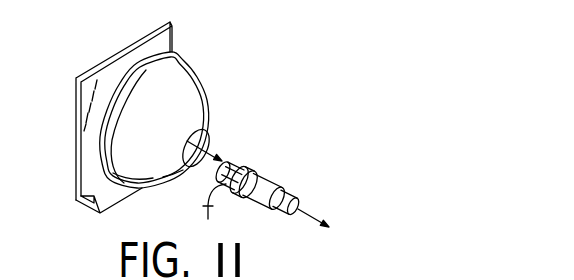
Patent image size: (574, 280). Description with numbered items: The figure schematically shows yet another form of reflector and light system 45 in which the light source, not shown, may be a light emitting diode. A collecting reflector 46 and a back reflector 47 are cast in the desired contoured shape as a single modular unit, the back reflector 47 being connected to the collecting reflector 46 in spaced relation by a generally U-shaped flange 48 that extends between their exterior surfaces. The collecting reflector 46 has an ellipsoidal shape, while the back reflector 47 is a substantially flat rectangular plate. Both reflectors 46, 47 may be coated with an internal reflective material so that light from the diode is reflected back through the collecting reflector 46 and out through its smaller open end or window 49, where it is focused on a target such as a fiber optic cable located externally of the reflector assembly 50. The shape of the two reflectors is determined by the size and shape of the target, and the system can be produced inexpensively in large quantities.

The reflector and light system 45 is at (215, 98).
The collecting reflector 46 is at (203, 117).
The back reflector 47 is at (74, 111).
The generally U-shaped flange 48 is at (86, 211).
The smaller open end or window 49 is at (211, 141).
The reflector assembly 50 is at (196, 77).